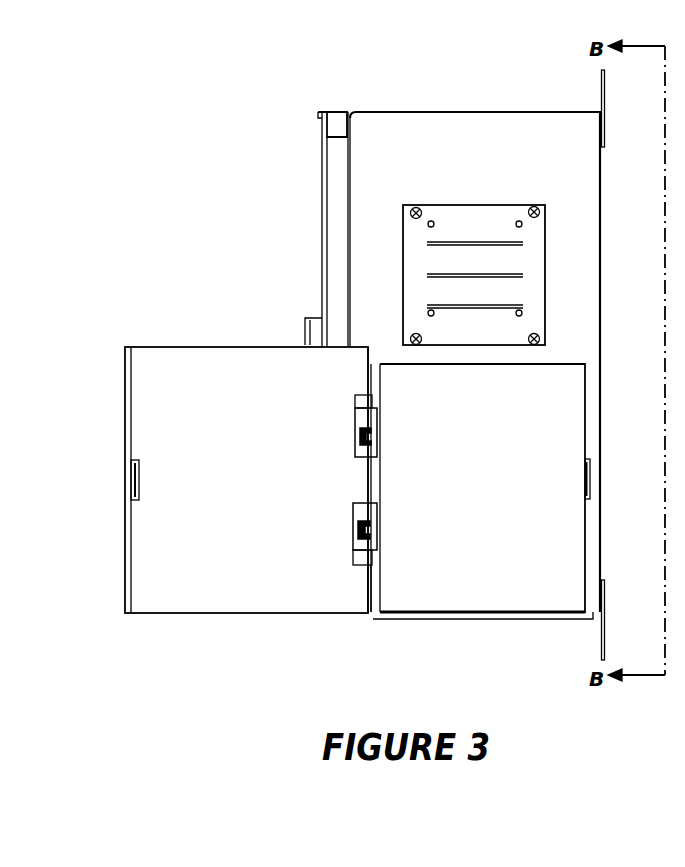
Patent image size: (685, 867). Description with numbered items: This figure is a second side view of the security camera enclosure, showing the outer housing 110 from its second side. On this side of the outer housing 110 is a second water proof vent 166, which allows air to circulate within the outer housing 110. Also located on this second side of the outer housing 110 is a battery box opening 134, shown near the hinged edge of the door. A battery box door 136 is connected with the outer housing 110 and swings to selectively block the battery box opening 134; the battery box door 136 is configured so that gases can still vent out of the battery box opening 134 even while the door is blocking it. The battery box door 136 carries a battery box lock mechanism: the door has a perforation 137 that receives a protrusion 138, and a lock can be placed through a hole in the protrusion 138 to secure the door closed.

The outer housing 110 is at (346, 107).
The battery box opening 134 is at (384, 605).
The battery box door 136 is at (205, 347).
The perforation 137 is at (133, 478).
The protrusion 138 is at (590, 477).
The second water proof vent 166 is at (472, 205).